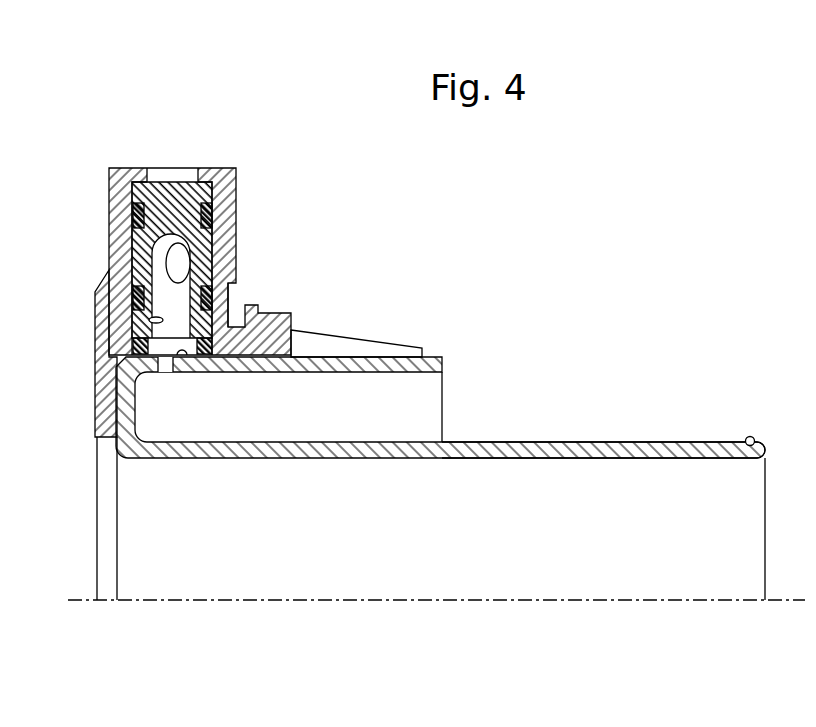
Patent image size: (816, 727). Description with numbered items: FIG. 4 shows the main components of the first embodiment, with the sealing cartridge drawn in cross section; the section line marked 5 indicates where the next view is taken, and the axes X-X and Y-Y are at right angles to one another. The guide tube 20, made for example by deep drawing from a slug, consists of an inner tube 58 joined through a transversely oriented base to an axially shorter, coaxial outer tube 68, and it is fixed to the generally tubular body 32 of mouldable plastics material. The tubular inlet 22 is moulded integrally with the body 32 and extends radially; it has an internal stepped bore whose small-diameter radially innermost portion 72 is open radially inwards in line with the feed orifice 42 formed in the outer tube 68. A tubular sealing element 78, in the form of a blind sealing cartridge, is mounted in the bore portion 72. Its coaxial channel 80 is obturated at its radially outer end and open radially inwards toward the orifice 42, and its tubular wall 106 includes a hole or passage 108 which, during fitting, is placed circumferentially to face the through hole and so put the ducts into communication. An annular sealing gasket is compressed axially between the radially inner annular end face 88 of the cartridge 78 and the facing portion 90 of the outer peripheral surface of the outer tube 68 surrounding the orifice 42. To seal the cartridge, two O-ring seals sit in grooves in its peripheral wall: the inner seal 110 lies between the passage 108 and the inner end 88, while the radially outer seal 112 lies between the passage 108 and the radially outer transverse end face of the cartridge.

The section line 5- 5 is at (180, 120).
The guide tube 20 is at (143, 538).
The tubular inlet 22 is at (242, 228).
The body 32 is at (299, 320).
The orifice 42 is at (165, 373).
The inner tube 58 is at (382, 458).
The outer tube 68 is at (382, 373).
The radially innermost portion of the bore 72 is at (132, 231).
The tubular sealing element 78 is at (222, 278).
The channel 80 is at (150, 321).
The radially inner annular end face 88 is at (133, 343).
The facing portion of outer peripheral surface 90 is at (184, 356).
The tubular wall 106 is at (137, 268).
The hole or passage 108 is at (186, 267).
The inner O-ring seal 110 is at (215, 296).
The radially outer O-ring seal 112 is at (213, 205).